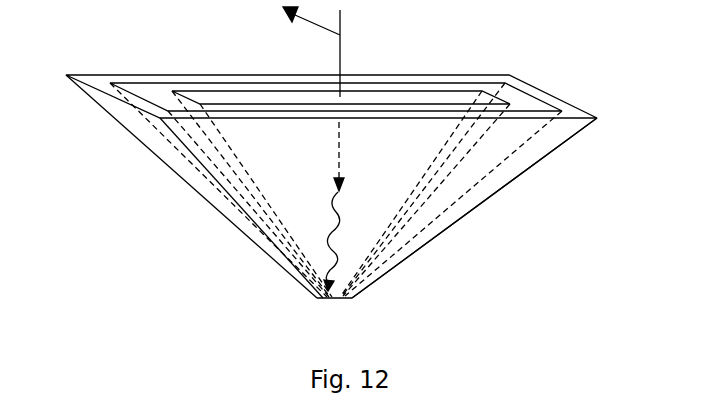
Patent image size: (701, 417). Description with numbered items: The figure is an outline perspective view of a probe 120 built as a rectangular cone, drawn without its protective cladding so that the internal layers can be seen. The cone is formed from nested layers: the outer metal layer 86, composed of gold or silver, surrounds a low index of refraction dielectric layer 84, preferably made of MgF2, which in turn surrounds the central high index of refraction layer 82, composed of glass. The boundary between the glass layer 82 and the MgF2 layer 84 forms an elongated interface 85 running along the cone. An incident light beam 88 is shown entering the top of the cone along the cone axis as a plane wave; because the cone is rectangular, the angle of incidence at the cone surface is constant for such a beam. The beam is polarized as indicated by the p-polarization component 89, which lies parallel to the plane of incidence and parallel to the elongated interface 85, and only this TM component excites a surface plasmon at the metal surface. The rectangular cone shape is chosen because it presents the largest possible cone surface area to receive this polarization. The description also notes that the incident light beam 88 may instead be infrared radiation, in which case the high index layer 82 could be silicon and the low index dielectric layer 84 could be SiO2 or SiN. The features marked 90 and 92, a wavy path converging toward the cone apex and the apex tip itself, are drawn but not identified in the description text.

The high index of refraction layer 82 is at (452, 100).
The low index of refraction dielectric layer 84 is at (155, 95).
The elongated interface 85 is at (242, 88).
The outer metal layer 86 is at (197, 185).
The incident light beam 88 is at (340, 65).
The p-polarization component 89 is at (316, 26).
The scattered beam path 90 is at (327, 238).
The apex tip 92 is at (337, 299).
The probe 120 is at (490, 241).